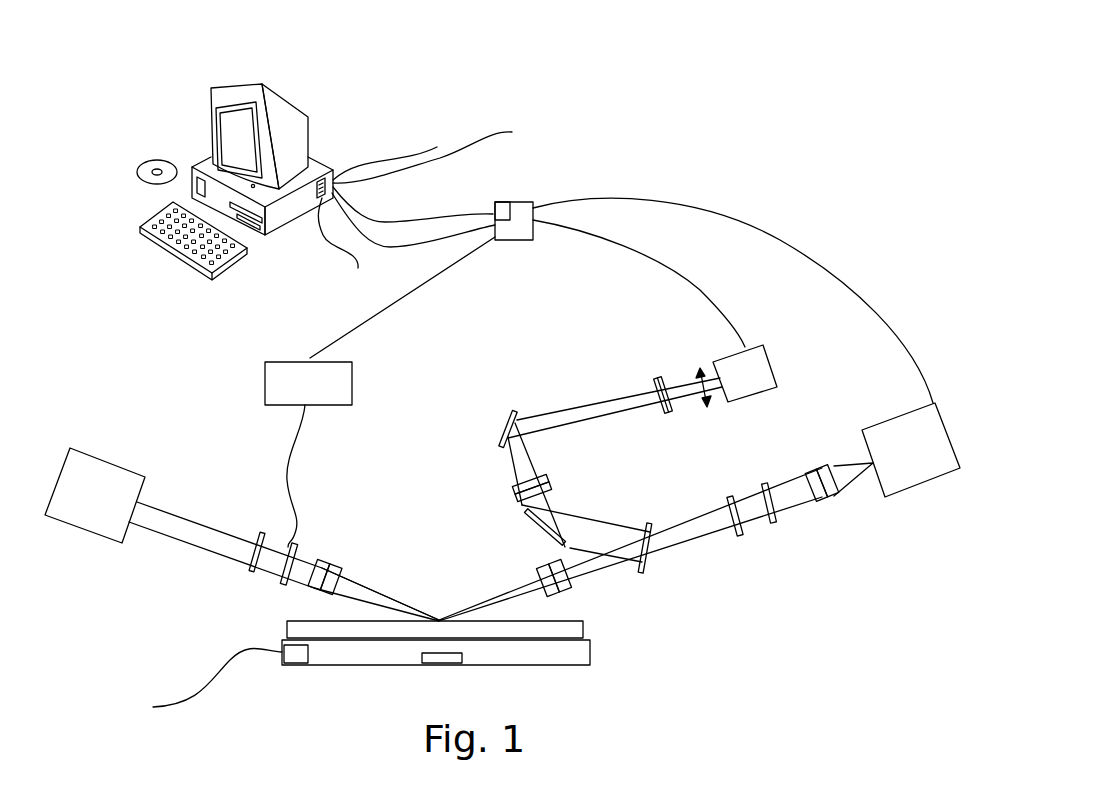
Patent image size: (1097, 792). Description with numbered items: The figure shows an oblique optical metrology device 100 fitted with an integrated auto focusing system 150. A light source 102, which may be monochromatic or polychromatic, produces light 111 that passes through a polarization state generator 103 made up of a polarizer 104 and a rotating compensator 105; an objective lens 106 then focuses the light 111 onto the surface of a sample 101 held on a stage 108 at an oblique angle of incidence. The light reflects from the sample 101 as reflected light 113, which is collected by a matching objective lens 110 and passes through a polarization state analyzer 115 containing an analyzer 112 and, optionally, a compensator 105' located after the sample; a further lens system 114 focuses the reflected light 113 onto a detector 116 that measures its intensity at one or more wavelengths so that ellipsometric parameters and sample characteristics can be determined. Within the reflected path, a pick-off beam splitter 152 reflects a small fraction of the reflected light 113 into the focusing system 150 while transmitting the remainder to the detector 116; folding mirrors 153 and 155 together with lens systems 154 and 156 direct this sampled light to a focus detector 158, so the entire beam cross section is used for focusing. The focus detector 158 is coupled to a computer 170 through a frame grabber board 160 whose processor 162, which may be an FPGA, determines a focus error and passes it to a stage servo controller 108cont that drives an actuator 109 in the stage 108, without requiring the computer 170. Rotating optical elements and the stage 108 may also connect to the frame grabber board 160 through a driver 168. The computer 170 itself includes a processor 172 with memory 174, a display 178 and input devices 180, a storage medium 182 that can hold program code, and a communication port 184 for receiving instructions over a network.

The optical metrology device 100 is at (215, 393).
The sample 101 is at (287, 625).
The light source 102 is at (117, 462).
The polarization state generator 103 is at (198, 585).
The polarizer 104 is at (258, 533).
The rotating compensator 105 is at (236, 587).
The compensator 105' is at (766, 543).
The objective lens 106 is at (335, 570).
The stage 108 is at (370, 665).
The stage servo controller 108cont is at (282, 660).
The actuator 109 is at (453, 665).
The objective lens 110 is at (570, 588).
The light 111 is at (392, 595).
The analyzer 112 is at (775, 523).
The reflected light 113 is at (486, 601).
The lens system 114 is at (838, 493).
The polarization state analyzer 115 is at (778, 603).
The detector 116 is at (890, 420).
The focusing system 150 is at (545, 370).
The beam splitter 152 is at (650, 525).
The folding mirror 153 is at (520, 505).
The lens system 154 is at (550, 481).
The folding mirror 155 is at (511, 410).
The lens system 156 is at (668, 413).
The focus detector 158 is at (768, 357).
The frame grabber board 160 is at (530, 202).
The processor 162 is at (496, 202).
The driver 168 is at (352, 398).
The computer 170 is at (165, 65).
The processor 172 is at (324, 162).
The memory 174 is at (277, 217).
The display 178 is at (217, 88).
The input devices 180 is at (140, 227).
The medium 182 is at (140, 168).
The communication port 184 is at (437, 147).